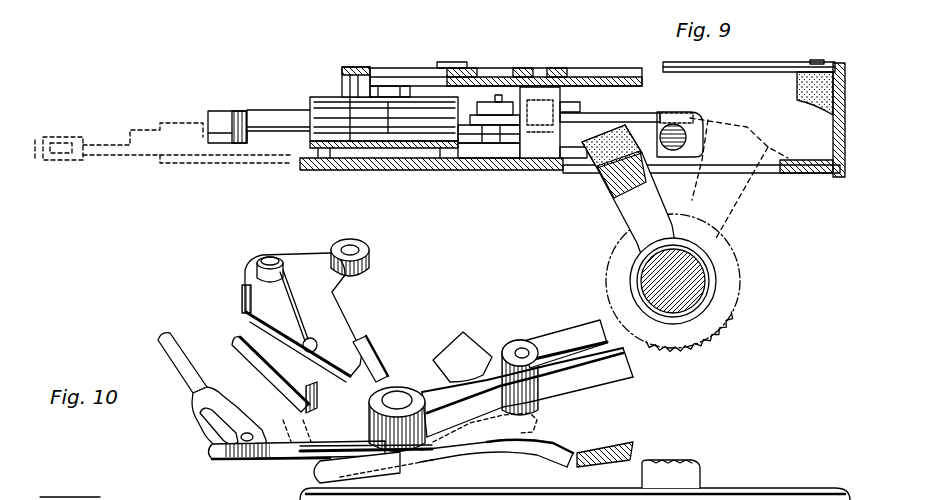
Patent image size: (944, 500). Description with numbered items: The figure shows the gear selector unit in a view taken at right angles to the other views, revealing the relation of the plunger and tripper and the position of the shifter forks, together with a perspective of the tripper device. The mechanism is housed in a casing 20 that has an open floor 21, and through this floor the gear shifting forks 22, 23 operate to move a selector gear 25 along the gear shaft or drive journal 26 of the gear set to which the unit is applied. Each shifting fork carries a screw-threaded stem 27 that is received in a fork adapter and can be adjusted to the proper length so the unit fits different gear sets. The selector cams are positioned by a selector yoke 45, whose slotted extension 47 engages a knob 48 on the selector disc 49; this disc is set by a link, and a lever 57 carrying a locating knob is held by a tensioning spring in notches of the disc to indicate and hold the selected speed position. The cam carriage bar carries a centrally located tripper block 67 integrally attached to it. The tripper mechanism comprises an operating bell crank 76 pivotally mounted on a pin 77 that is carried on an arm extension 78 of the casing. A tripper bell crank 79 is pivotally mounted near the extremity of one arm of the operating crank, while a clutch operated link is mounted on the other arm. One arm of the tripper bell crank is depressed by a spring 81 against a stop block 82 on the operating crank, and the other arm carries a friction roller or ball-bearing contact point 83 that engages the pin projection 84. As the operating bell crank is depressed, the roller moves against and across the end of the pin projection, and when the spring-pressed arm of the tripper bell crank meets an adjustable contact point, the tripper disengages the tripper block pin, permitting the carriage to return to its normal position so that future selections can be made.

In FIG. 10, the casing 20 is at (790, 489).
In FIG. 9, the open floor 21 is at (572, 137).
In FIG. 9, the gear shifting fork 22 is at (739, 179).
In FIG. 9, the gear shifting fork 23 is at (628, 217).
In FIG. 9, the selector gear 25 is at (733, 275).
In FIG. 9, the gear shaft or drive journal 26 is at (700, 303).
In FIG. 9, the screw-threaded stem 27 is at (610, 188).
In FIG. 9, the selector yoke 45 is at (344, 67).
In FIG. 9, the slotted extension 47 is at (482, 75).
In FIG. 9, the knob 48 is at (455, 62).
In FIG. 9, the selector disc 49 is at (598, 83).
In FIG. 9, the lever 57 is at (749, 87).
In FIG. 9, the tripper block 67 is at (320, 94).
In FIG. 10, the operating bell crank 76 is at (288, 450).
In FIG. 10, the pin 77 is at (398, 397).
In FIG. 10, the arm extension 78 is at (483, 453).
In FIG. 10, the tripper bell crank 79 is at (315, 317).
In FIG. 10, the spring 81 is at (312, 284).
In FIG. 10, the stop block 82 is at (383, 352).
In FIG. 9, the friction roller or ball-bearing contact point 83 is at (222, 112).
In FIG. 10, the friction roller or ball-bearing contact point 83 is at (370, 258).
In FIG. 9, the pin projection 84 is at (272, 100).